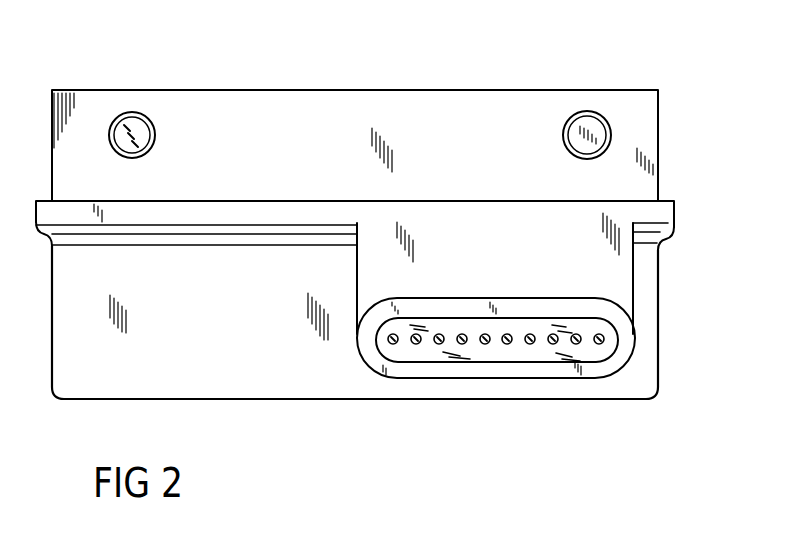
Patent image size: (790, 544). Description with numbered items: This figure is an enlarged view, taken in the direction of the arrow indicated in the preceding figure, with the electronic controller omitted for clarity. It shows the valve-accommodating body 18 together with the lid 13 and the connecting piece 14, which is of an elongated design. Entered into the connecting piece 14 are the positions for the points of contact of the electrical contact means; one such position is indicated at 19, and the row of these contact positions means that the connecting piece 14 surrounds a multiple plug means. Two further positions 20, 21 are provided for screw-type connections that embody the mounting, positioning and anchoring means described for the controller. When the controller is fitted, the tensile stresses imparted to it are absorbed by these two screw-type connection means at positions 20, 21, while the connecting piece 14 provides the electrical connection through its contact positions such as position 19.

The lid 13 is at (222, 372).
The connecting piece 14 is at (407, 372).
The valve-accommodating body 18 is at (312, 110).
The position for a point of contact 19 is at (600, 344).
The position for screw-type connection 20 is at (132, 113).
The position for screw-type connection 21 is at (585, 113).